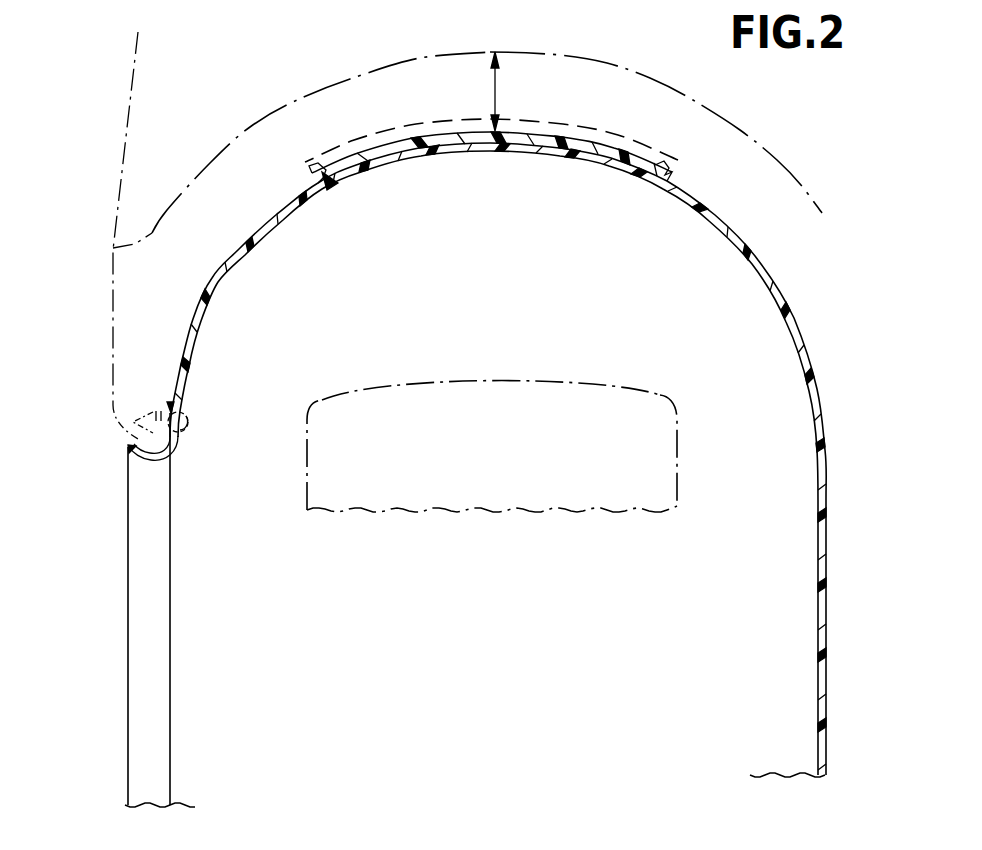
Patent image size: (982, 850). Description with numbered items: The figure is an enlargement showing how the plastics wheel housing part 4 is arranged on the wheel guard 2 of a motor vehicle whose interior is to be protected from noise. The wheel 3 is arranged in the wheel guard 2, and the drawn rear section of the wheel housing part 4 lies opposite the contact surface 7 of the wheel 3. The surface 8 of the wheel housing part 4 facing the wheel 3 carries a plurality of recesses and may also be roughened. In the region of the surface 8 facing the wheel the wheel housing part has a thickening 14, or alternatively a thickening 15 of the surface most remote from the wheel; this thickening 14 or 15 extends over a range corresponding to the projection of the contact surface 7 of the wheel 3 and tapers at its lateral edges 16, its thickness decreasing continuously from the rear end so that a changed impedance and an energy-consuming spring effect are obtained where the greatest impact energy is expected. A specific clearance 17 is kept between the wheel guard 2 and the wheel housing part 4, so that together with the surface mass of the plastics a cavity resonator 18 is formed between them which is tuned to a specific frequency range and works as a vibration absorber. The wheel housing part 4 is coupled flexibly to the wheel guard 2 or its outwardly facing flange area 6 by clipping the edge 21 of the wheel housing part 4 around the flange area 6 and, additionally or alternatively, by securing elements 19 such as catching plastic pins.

The wheel guard 2 is at (291, 102).
The wheel 3 is at (501, 464).
The wheel housing part 4 is at (336, 184).
The flange area 6 is at (143, 442).
The contact surface 7 is at (517, 376).
The surface 8 is at (272, 221).
The thickening 14 is at (514, 150).
The thickening 15 is at (395, 130).
The lateral edges 16 is at (316, 173).
The clearance 17 is at (497, 88).
The cavity resonator 18 is at (623, 97).
The securing elements 19 is at (186, 409).
The edge 21 is at (160, 527).